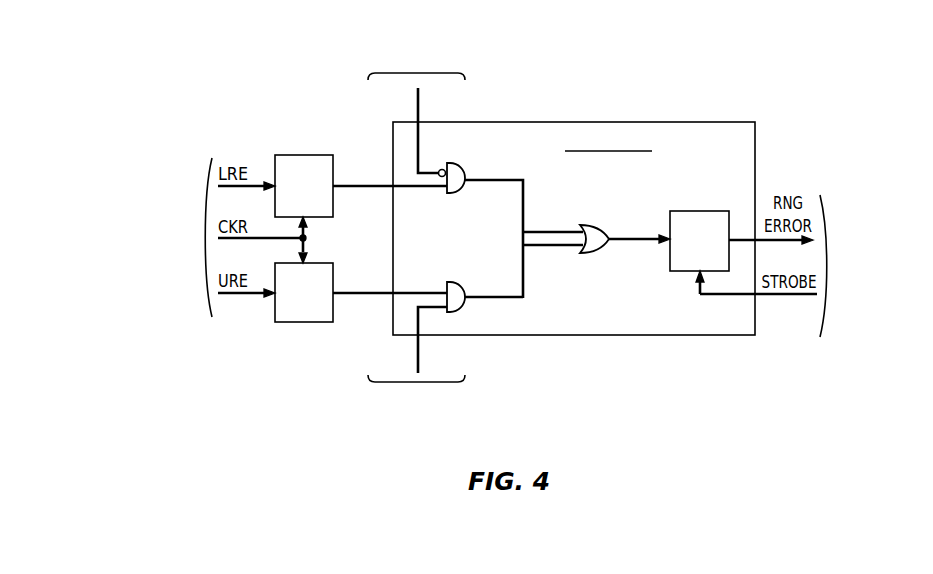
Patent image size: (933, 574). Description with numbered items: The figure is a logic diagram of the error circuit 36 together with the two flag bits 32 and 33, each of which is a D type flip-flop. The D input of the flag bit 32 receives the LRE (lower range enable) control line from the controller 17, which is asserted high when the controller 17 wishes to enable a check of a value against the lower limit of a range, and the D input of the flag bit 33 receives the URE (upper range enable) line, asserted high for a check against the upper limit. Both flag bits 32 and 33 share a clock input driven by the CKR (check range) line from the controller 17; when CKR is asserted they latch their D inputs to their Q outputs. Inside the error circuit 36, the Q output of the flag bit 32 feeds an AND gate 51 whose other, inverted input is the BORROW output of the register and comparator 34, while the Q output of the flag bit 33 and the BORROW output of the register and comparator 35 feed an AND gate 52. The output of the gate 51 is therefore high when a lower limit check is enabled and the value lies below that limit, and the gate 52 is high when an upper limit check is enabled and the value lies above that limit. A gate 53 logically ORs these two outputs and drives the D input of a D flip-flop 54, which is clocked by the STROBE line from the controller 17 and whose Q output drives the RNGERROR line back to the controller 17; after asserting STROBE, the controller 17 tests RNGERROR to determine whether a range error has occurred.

The controller 17 is at (514, 247).
The flag bit 32 is at (303, 155).
The flag bit 33 is at (303, 322).
The register and comparator 34 is at (425, 86).
The register and comparator 35 is at (425, 383).
The error circuit 36 is at (620, 122).
The AND gate 51 is at (461, 166).
The AND gate 52 is at (461, 284).
The OR gate 53 is at (598, 226).
The D flip-flop 54 is at (700, 211).